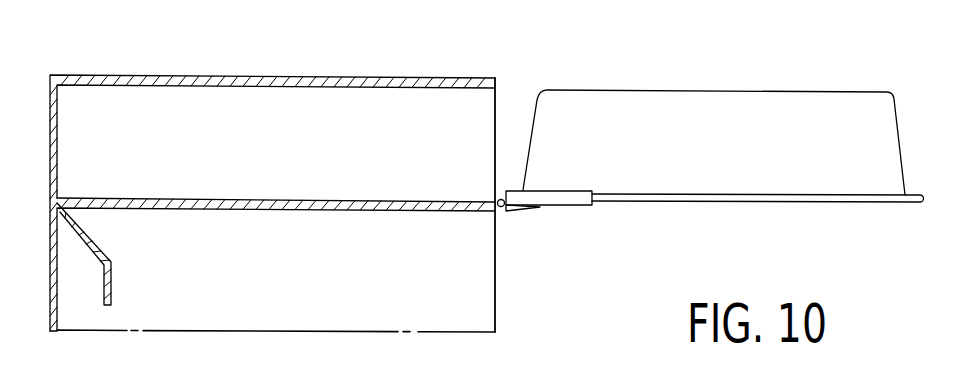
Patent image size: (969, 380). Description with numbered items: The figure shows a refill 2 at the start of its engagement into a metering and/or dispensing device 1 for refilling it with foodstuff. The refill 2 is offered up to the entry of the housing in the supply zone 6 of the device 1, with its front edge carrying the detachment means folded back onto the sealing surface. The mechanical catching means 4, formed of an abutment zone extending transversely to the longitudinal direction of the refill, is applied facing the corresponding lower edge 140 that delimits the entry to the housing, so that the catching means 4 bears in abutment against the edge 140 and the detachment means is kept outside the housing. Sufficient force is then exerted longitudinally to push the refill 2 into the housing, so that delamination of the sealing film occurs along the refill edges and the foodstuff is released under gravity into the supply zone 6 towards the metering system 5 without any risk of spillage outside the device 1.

The metering and/or dispensing device 1 is at (487, 185).
The refill 2 is at (778, 88).
The mechanical catching means 4 is at (527, 217).
The metering system 5 is at (224, 322).
The supply zone 6 is at (167, 119).
The lower edge 140 is at (495, 212).